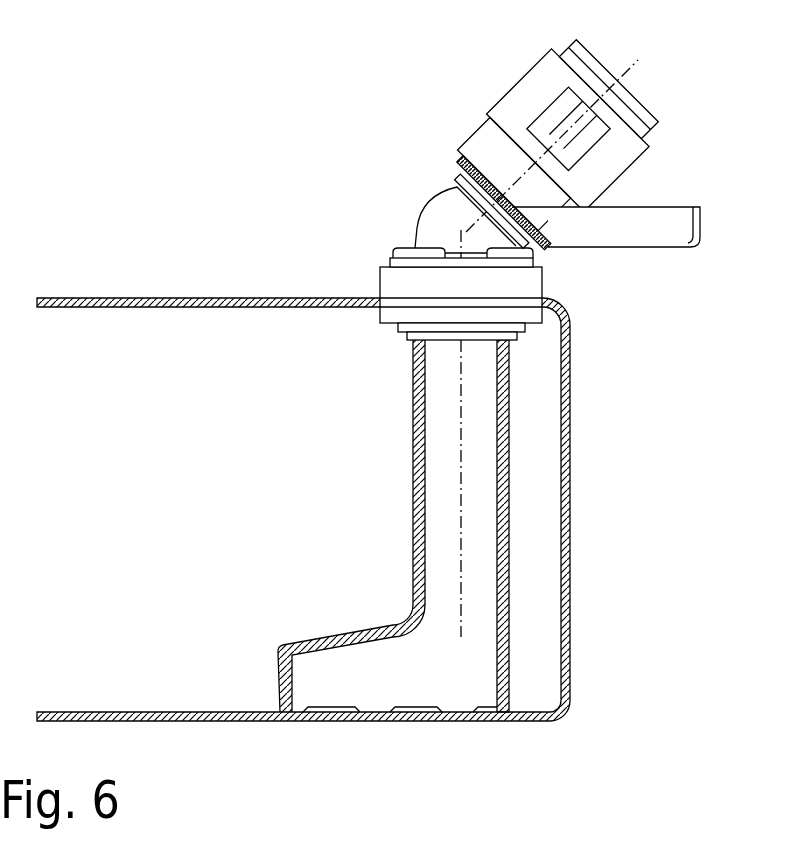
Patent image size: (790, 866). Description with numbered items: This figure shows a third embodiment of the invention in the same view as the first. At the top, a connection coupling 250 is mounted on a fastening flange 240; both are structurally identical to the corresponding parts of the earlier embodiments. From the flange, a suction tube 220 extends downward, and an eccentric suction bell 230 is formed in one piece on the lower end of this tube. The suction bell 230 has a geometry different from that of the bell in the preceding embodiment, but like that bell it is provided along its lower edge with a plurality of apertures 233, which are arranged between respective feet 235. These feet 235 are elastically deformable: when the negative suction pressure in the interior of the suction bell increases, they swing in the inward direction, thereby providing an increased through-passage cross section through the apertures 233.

The suction tube 220 is at (500, 518).
The suction bell 230 is at (337, 582).
The apertures 233 is at (487, 714).
The feet 235 is at (460, 707).
The fastening flange 240 is at (344, 273).
The connection coupling 250 is at (447, 93).